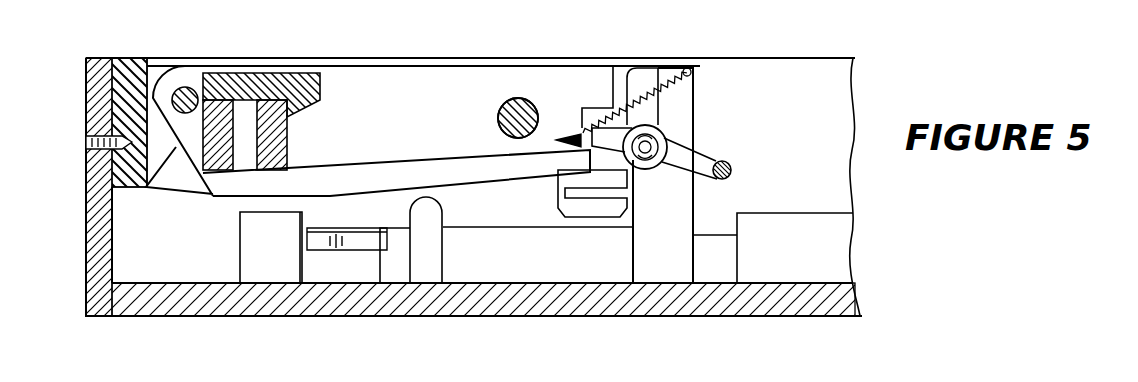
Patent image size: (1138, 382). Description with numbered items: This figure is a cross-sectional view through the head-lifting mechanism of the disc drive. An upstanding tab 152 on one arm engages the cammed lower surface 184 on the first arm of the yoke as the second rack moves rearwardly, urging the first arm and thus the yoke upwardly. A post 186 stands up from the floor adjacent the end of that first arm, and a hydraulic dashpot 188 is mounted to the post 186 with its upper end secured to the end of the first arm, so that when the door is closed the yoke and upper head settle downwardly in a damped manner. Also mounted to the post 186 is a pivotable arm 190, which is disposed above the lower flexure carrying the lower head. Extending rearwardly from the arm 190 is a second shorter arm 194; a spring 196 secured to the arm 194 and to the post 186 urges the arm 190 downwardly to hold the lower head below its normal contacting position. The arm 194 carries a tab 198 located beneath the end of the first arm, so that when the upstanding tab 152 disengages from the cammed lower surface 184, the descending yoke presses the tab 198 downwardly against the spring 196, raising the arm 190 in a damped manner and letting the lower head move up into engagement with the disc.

The upstanding tab 152 is at (430, 192).
The cammed lower surface 184 is at (453, 176).
The post 186 is at (678, 118).
The hydraulic dashpot 188 is at (595, 217).
The arm 190 is at (700, 158).
The second shorter arm 194 is at (556, 141).
The spring 196 is at (641, 93).
The tab 198 is at (598, 150).